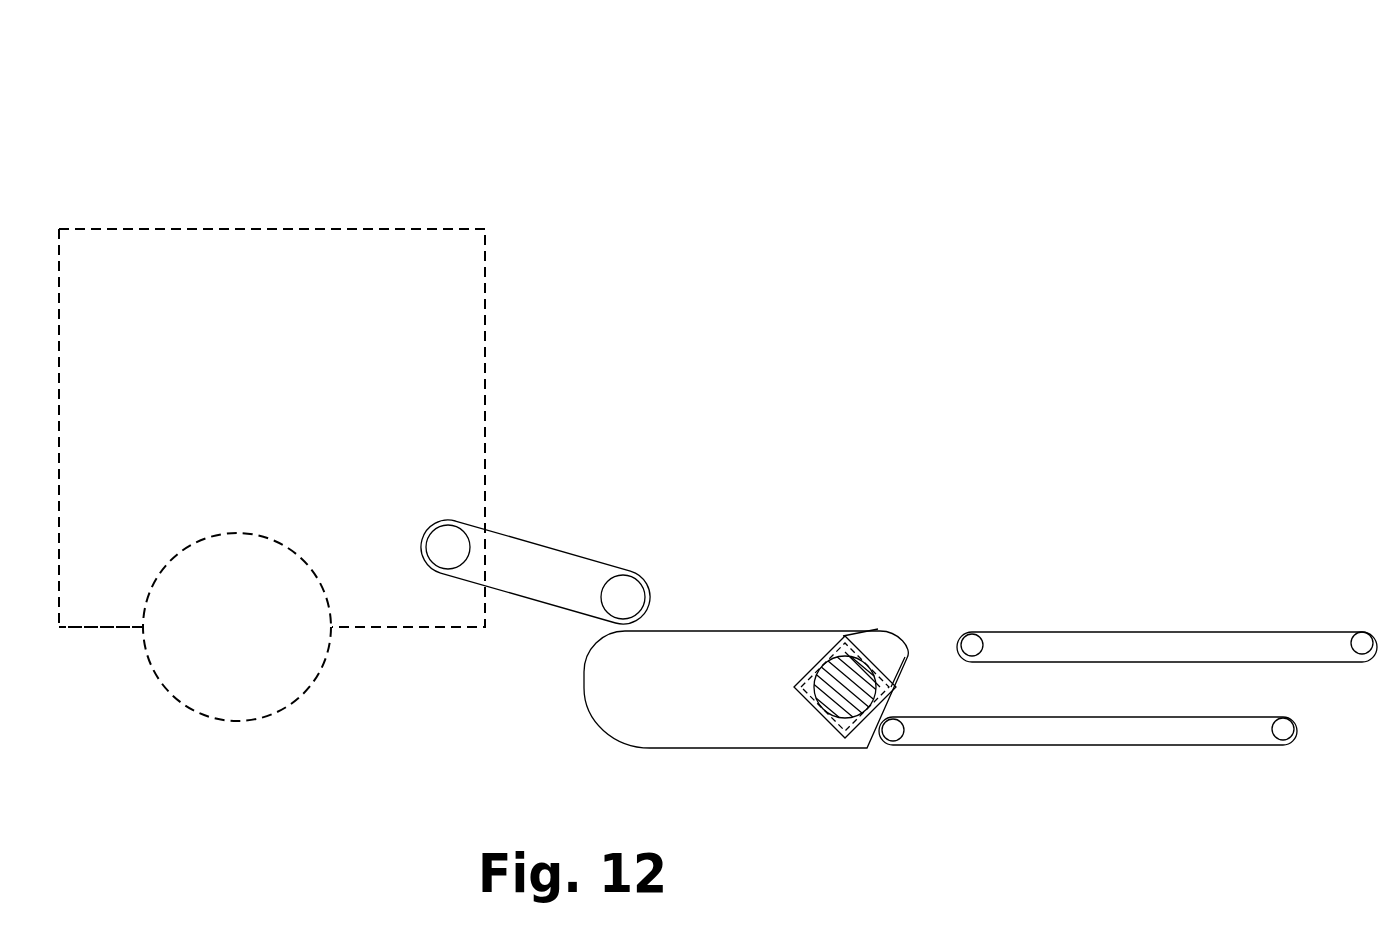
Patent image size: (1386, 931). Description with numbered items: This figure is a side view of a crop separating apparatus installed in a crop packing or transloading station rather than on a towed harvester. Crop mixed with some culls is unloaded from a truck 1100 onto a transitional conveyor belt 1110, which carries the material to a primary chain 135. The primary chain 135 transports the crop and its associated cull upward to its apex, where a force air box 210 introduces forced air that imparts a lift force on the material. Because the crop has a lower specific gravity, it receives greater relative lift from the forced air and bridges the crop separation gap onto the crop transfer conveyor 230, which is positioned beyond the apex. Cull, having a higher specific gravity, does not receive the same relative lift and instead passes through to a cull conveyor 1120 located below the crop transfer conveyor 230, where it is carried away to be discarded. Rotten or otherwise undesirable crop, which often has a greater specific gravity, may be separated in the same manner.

The truck 1100 is at (386, 111).
The transitional conveyor belt 1110 is at (528, 538).
The primary chain 135 is at (752, 632).
The force air box 210 is at (806, 724).
The crop transfer conveyor 230 is at (998, 633).
The cull conveyor 1120 is at (983, 745).